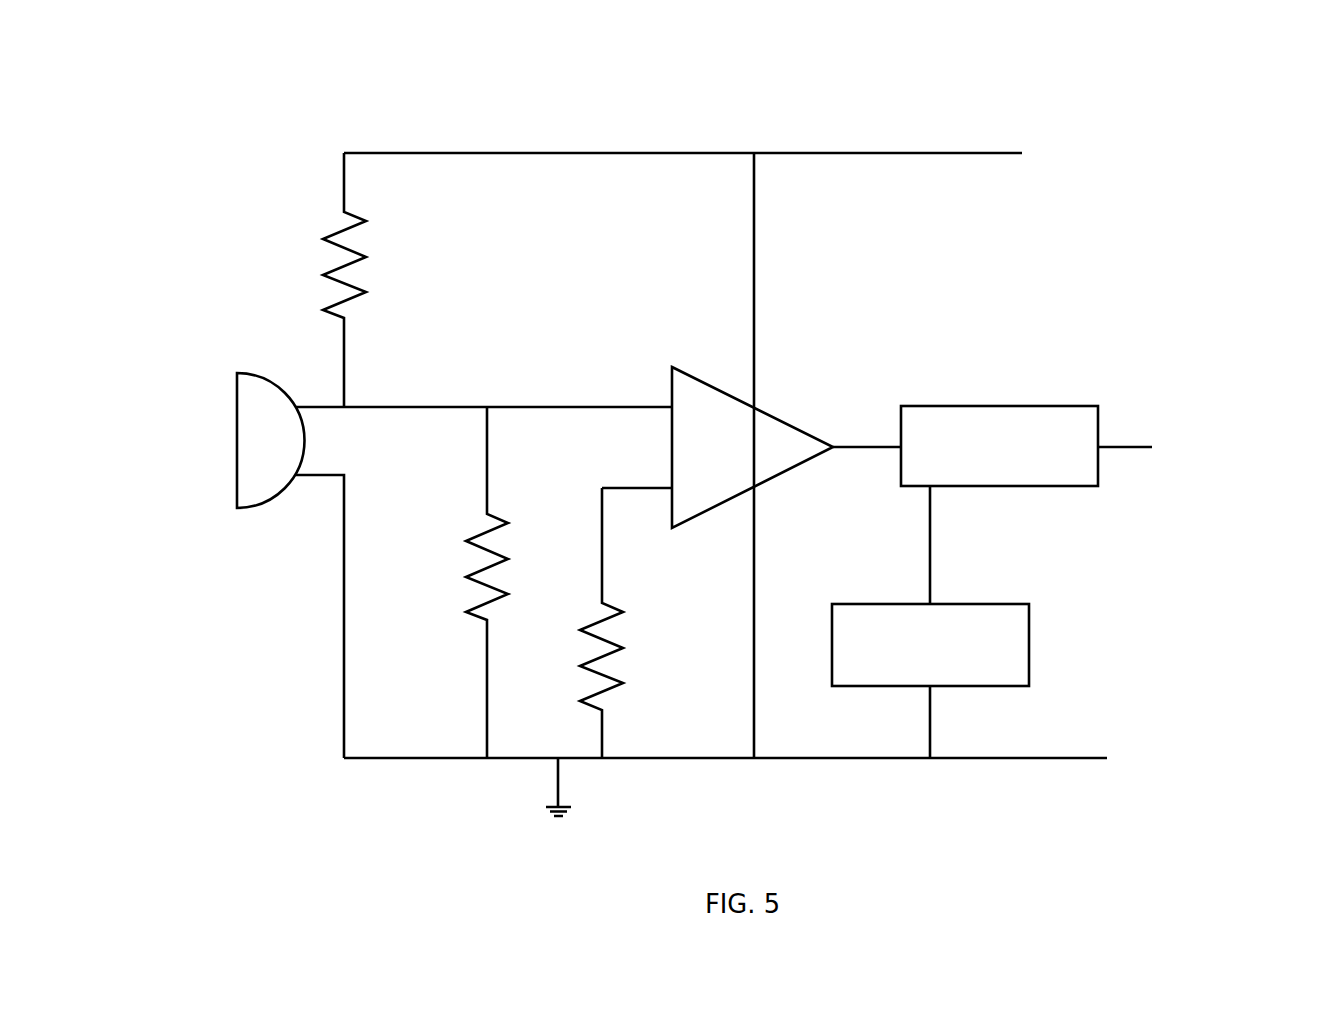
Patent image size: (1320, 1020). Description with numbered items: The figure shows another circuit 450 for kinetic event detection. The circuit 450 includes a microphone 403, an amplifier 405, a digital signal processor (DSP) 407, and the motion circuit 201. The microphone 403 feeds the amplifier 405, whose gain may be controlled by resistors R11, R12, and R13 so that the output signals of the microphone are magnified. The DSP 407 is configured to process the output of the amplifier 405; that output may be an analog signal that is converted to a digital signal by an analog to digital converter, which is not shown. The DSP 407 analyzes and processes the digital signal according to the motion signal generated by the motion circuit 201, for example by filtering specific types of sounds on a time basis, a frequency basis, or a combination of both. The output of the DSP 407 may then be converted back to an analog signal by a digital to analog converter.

The circuit 450 is at (142, 103).
The microphone 403 is at (240, 373).
The amplifier 405 is at (678, 367).
The digital signal processor (DSP) 407 is at (944, 406).
The motion circuit 201 is at (874, 604).
The resistor R11 is at (330, 228).
The resistor R12 is at (472, 540).
The resistor R13 is at (582, 626).